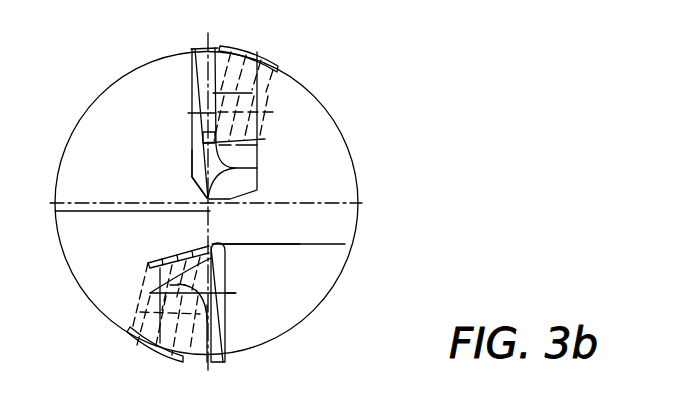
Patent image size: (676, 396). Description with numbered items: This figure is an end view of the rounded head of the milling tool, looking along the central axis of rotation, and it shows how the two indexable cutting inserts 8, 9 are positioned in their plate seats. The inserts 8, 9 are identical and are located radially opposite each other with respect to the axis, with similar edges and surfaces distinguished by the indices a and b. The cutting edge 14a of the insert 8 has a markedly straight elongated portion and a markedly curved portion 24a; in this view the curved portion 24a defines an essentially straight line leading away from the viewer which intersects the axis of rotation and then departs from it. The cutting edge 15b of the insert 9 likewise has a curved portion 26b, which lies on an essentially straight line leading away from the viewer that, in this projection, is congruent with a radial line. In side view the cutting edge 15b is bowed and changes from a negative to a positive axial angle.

The cutting insert 8 is at (266, 141).
The cutting insert 9 is at (233, 332).
The cutting edge 14a is at (188, 88).
The cutting edge 15b is at (232, 314).
The curved portion 24a is at (199, 159).
The curved portion 26b is at (222, 272).